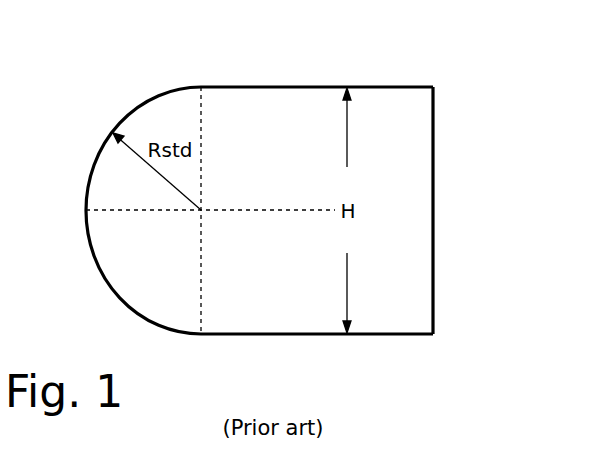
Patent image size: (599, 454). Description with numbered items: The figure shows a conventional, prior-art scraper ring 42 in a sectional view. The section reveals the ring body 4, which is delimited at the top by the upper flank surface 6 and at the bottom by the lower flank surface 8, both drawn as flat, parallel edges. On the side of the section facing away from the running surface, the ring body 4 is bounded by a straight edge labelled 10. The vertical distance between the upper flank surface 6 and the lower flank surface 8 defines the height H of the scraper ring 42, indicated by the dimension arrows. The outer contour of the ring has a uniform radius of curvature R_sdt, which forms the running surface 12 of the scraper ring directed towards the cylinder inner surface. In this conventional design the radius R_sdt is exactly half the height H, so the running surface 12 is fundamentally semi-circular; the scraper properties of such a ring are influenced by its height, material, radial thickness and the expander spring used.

The scraper ring 42 is at (257, 189).
The ring body 4 is at (367, 210).
The upper flank surface 6 is at (317, 70).
The lower flank surface 8 is at (317, 355).
The right flat side 10 is at (453, 210).
The running surface 12 is at (121, 210).